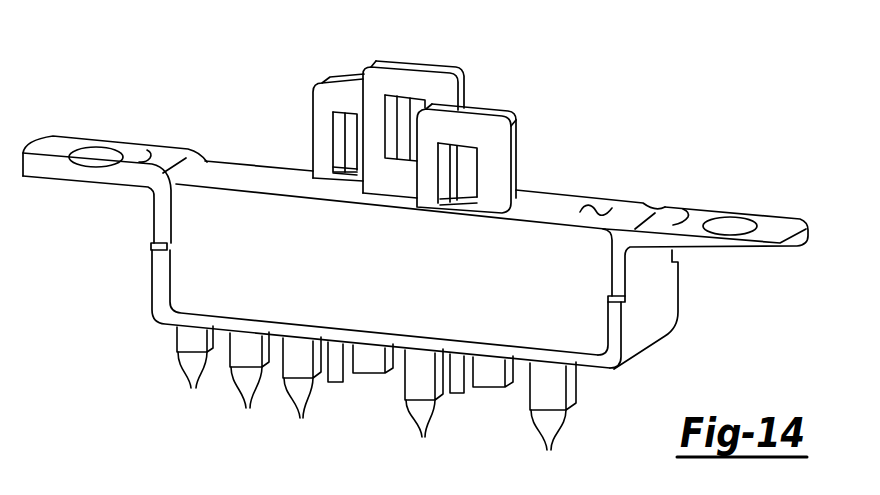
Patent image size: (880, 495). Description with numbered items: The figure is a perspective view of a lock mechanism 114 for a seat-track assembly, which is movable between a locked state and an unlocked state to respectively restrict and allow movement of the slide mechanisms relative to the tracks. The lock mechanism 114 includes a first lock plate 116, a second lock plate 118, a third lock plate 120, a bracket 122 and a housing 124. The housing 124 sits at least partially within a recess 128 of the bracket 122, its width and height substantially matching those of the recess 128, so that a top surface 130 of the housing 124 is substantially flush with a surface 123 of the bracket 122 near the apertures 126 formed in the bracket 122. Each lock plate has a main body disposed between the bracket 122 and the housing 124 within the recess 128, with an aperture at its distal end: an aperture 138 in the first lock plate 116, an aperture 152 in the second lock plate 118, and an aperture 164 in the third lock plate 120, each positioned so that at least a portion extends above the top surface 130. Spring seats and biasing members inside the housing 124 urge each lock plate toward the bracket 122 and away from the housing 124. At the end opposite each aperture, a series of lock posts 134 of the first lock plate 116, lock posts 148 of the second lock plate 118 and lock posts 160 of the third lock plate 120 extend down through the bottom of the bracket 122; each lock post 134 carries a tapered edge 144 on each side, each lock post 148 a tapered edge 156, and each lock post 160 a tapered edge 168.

The lock mechanism 114 is at (629, 52).
The first lock plate 116 is at (491, 106).
The second lock plate 118 is at (406, 58).
The third lock plate 120 is at (320, 82).
The bracket 122 is at (779, 218).
The surface 123 is at (147, 150).
The housing 124 is at (229, 156).
The apertures 126 is at (90, 152).
The recess 128 is at (171, 308).
The top surface 130 is at (597, 200).
The lock posts 134 is at (304, 350).
The aperture 138 is at (481, 168).
The tapered edge 144 is at (425, 425).
The lock posts 148 is at (250, 348).
The aperture 152 is at (430, 104).
The tapered edge 156 is at (246, 400).
The lock posts 160 is at (176, 338).
The aperture 164 is at (330, 131).
The tapered edge 168 is at (192, 387).